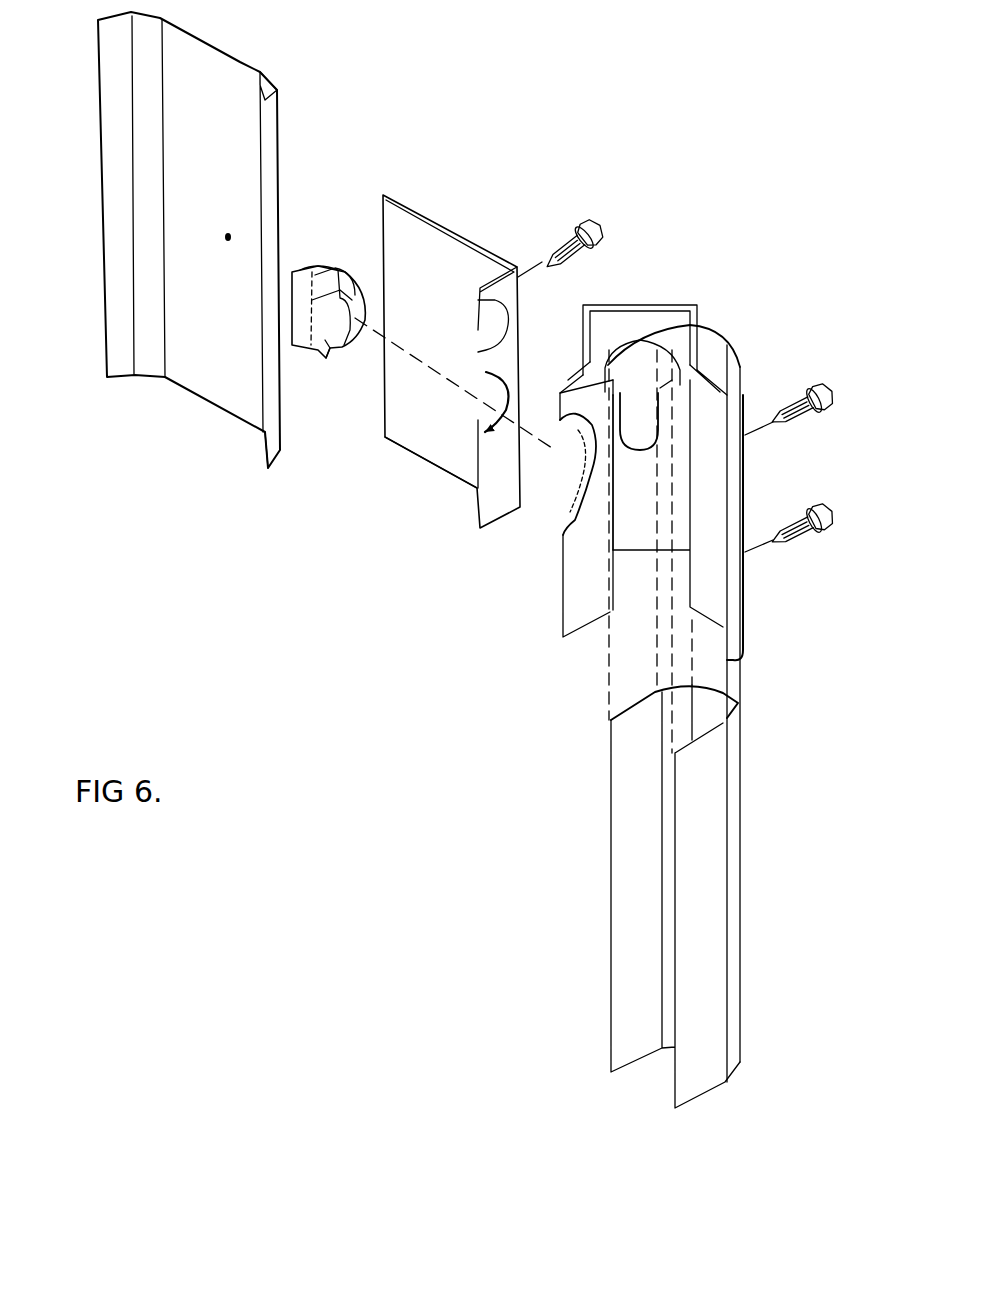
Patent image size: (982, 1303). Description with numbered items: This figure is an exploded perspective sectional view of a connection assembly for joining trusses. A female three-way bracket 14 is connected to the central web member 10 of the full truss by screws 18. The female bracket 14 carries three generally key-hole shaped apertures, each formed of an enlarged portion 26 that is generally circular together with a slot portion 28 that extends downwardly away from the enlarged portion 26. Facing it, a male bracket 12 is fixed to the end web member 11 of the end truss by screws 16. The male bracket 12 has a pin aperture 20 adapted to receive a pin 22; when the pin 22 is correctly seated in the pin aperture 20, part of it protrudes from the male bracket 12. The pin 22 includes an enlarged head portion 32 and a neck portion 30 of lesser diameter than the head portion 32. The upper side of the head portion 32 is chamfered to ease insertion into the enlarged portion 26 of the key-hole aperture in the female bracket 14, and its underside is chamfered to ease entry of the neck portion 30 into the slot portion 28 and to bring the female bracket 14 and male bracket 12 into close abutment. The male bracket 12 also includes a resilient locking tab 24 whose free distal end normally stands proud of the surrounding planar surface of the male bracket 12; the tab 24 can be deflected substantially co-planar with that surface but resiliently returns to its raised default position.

The central web member 10 is at (638, 945).
The end web member 11 is at (208, 355).
The male bracket 12 is at (432, 427).
The female three-way bracket 14 is at (656, 305).
The screws 16 is at (578, 212).
The screws 18 is at (814, 377).
The pin aperture 20 is at (480, 422).
The pin 22 is at (316, 258).
The resilient locking tab 24 is at (482, 290).
The enlarged portion 26 is at (575, 423).
The slot portion 28 is at (570, 497).
The neck portion 30 is at (330, 290).
The head portion 32 is at (343, 358).